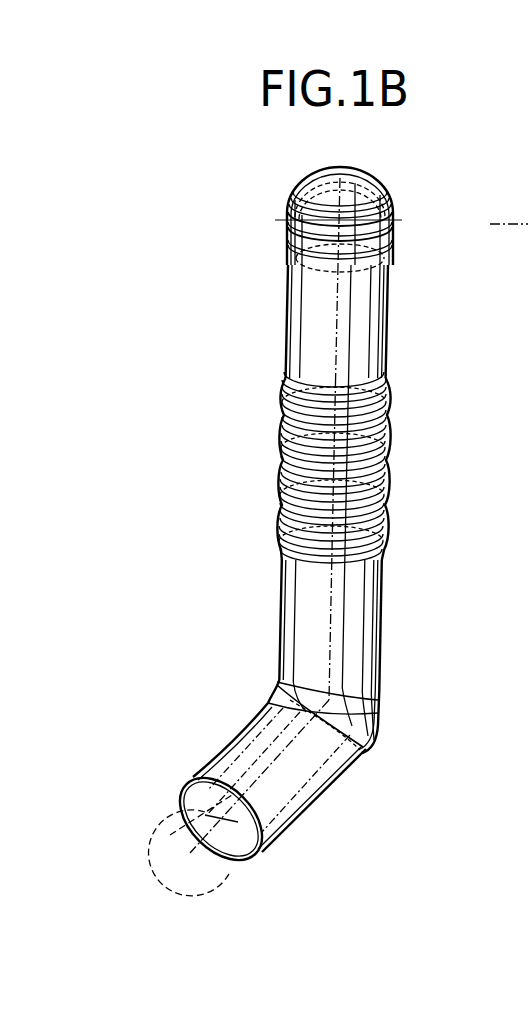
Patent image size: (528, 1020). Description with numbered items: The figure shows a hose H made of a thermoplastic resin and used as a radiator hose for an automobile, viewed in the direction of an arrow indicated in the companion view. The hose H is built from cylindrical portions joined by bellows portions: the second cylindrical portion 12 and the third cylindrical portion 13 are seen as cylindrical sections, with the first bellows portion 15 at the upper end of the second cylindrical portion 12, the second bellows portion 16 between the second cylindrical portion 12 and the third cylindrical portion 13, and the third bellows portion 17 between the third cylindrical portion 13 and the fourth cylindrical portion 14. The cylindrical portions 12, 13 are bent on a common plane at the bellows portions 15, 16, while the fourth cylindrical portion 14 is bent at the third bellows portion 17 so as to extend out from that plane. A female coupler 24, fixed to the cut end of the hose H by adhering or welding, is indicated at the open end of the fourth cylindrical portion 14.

The hose H is at (404, 495).
The second cylindrical portion 12 is at (296, 332).
The third cylindrical portion 13 is at (357, 628).
The fourth cylindrical portion 14 is at (243, 745).
The first bellows portion 15 is at (284, 211).
The second bellows portion 16 is at (279, 466).
The third bellows portion 17 is at (379, 742).
The female coupler 24 is at (145, 837).